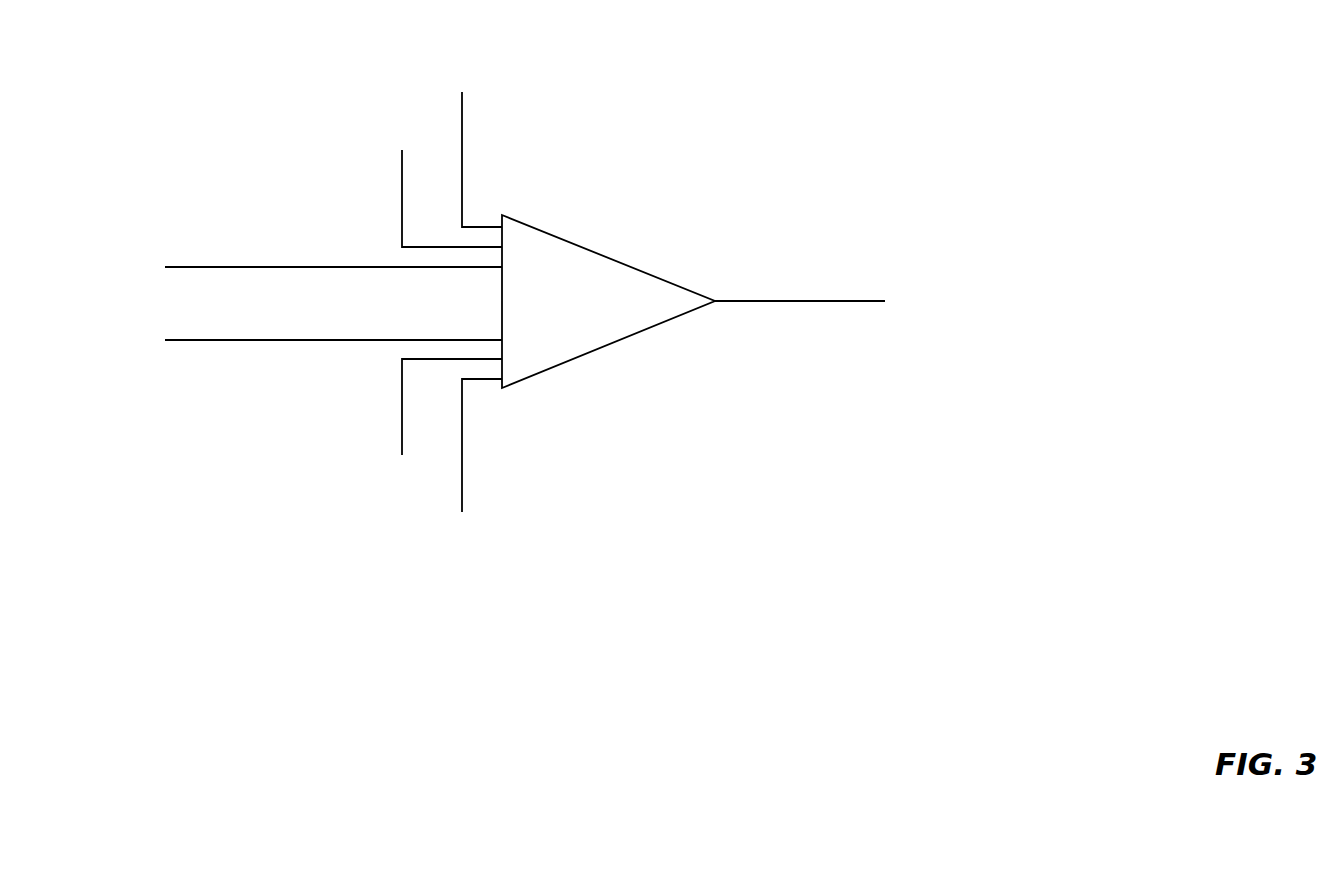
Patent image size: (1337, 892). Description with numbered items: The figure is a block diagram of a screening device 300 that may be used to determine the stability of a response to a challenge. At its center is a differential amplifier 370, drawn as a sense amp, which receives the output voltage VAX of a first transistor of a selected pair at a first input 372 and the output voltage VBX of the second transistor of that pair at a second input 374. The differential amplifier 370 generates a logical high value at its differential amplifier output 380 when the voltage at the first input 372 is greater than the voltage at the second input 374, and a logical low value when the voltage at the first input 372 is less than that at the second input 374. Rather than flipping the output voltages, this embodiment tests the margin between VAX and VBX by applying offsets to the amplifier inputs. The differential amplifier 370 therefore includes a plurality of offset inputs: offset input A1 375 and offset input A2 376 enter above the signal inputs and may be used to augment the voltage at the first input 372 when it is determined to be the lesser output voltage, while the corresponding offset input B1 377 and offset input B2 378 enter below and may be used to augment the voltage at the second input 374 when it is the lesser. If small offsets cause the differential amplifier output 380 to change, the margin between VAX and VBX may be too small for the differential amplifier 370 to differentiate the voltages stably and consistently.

The screening device 300 is at (228, 104).
The differential amplifier 370 is at (617, 260).
The first input 372 is at (352, 267).
The second input 374 is at (349, 340).
The offset input A1 375 is at (402, 172).
The offset input A2 376 is at (462, 138).
The offset input B1 377 is at (402, 443).
The offset input B2 378 is at (462, 503).
The differential amplifier output 380 is at (940, 285).